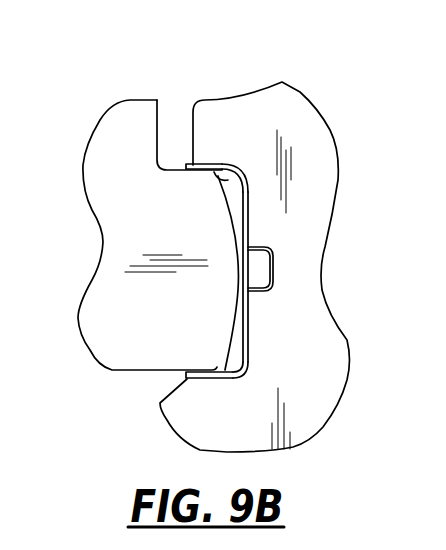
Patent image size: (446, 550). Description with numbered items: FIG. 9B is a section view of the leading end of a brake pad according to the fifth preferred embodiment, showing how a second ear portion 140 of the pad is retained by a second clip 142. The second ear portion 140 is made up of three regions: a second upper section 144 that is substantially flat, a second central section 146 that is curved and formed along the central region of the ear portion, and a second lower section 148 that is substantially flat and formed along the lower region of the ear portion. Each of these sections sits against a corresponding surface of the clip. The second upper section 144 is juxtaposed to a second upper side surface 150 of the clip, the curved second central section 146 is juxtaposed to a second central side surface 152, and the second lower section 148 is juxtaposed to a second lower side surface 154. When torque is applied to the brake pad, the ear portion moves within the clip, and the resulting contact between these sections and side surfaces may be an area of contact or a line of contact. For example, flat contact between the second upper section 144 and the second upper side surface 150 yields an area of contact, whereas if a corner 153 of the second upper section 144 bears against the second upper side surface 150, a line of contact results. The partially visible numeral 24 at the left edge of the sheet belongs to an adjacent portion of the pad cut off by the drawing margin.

The housing 24 is at (14, 132).
The second ear portion 140 is at (123, 235).
The second clip 142 is at (243, 210).
The second upper section 144 is at (196, 171).
The second central section 146 is at (231, 270).
The second lower section 148 is at (202, 353).
The second upper side surface 150 is at (247, 176).
The second central side surface 152 is at (241, 291).
The corner 153 is at (214, 172).
The second lower side surface 154 is at (227, 367).